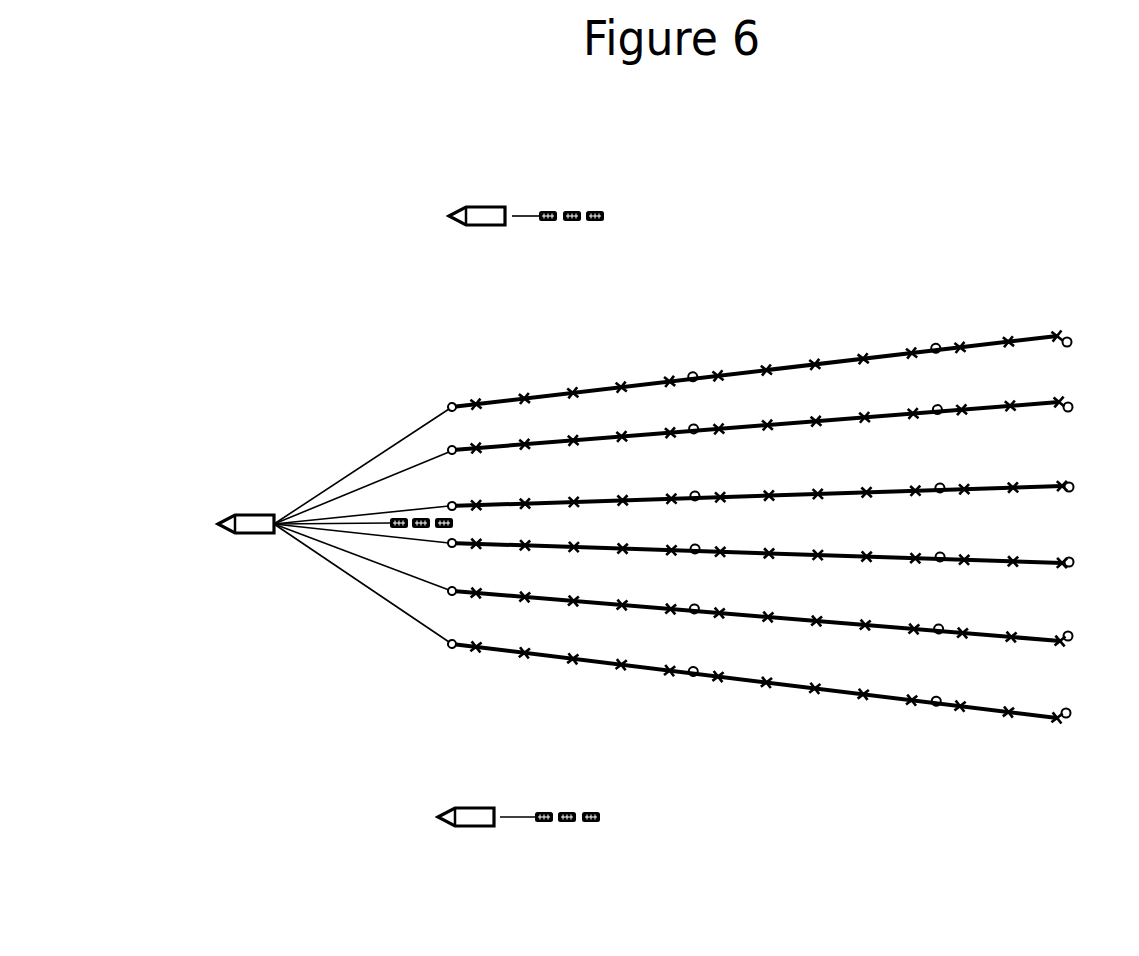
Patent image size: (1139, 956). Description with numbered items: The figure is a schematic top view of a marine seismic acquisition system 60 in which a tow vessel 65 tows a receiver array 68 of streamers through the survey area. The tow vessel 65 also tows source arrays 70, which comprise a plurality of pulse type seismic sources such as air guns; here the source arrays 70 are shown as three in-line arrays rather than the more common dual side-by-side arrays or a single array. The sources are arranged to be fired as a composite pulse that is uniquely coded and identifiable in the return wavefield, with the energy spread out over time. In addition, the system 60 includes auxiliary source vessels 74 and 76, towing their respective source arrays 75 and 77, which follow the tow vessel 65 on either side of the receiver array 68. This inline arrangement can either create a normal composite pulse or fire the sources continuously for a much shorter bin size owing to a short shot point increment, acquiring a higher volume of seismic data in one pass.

The marine seismic acquisition system 60 is at (322, 352).
The tow vessel 65 is at (257, 535).
The receiver array 68 is at (1042, 282).
The source arrays 70 is at (392, 517).
The auxiliary source vessel 74 is at (448, 216).
The source array 75 is at (605, 216).
The auxiliary source vessel 76 is at (440, 818).
The source array 77 is at (602, 815).